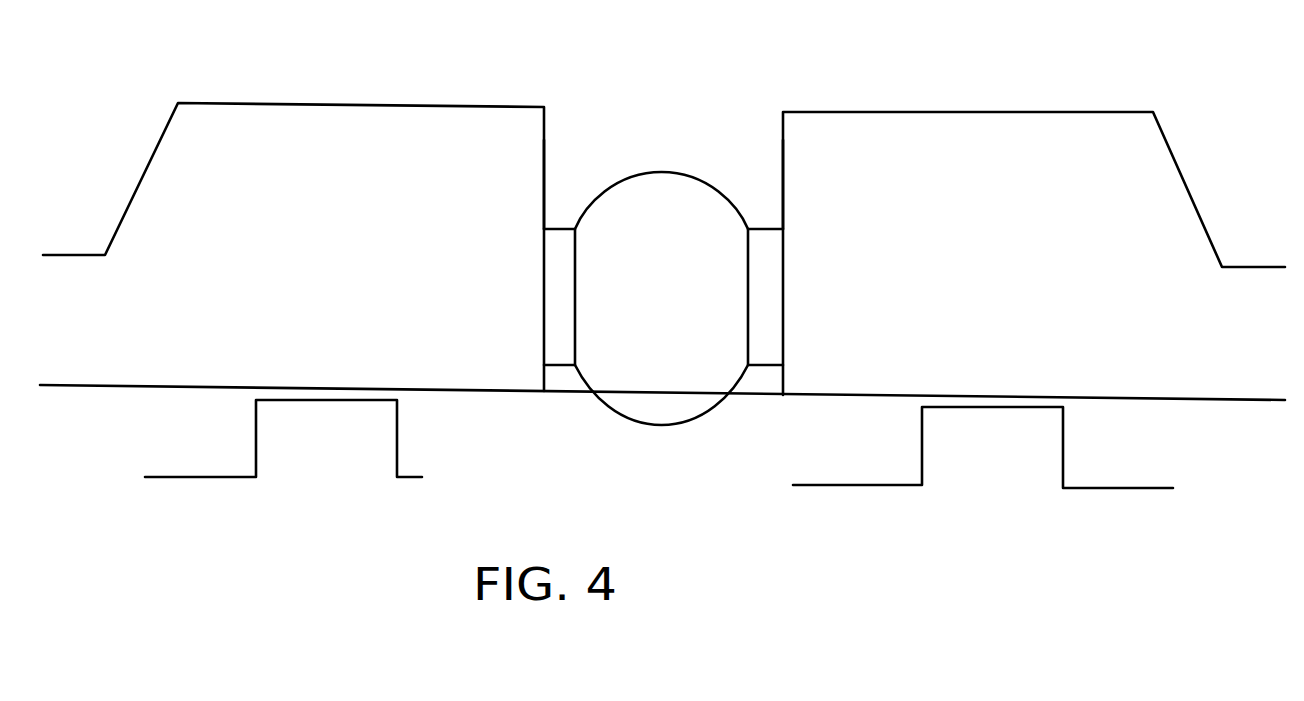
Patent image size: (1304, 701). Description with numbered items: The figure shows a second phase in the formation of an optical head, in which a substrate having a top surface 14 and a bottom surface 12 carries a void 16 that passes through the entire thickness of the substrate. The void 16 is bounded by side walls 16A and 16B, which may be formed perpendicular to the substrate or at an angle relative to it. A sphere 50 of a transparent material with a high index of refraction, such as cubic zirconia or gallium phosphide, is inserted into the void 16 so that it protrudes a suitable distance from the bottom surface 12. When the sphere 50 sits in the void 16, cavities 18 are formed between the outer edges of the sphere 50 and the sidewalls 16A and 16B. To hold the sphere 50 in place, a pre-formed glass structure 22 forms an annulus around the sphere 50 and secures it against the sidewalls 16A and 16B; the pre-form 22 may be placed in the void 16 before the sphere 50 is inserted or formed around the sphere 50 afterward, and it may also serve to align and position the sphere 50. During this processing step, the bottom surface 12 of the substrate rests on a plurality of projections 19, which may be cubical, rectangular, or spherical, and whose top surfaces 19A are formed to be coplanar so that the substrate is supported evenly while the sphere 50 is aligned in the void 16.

The bottom surface 12 is at (73, 387).
The top surface 14 is at (280, 103).
The void 16 is at (660, 127).
The side wall 16A is at (546, 133).
The side wall 16B is at (784, 133).
The cavity 18 is at (572, 198).
The pre-formed glass structure 22 is at (770, 230).
The sphere 50 is at (674, 396).
The projection 19 is at (302, 467).
The top surface of projection 19A is at (987, 407).